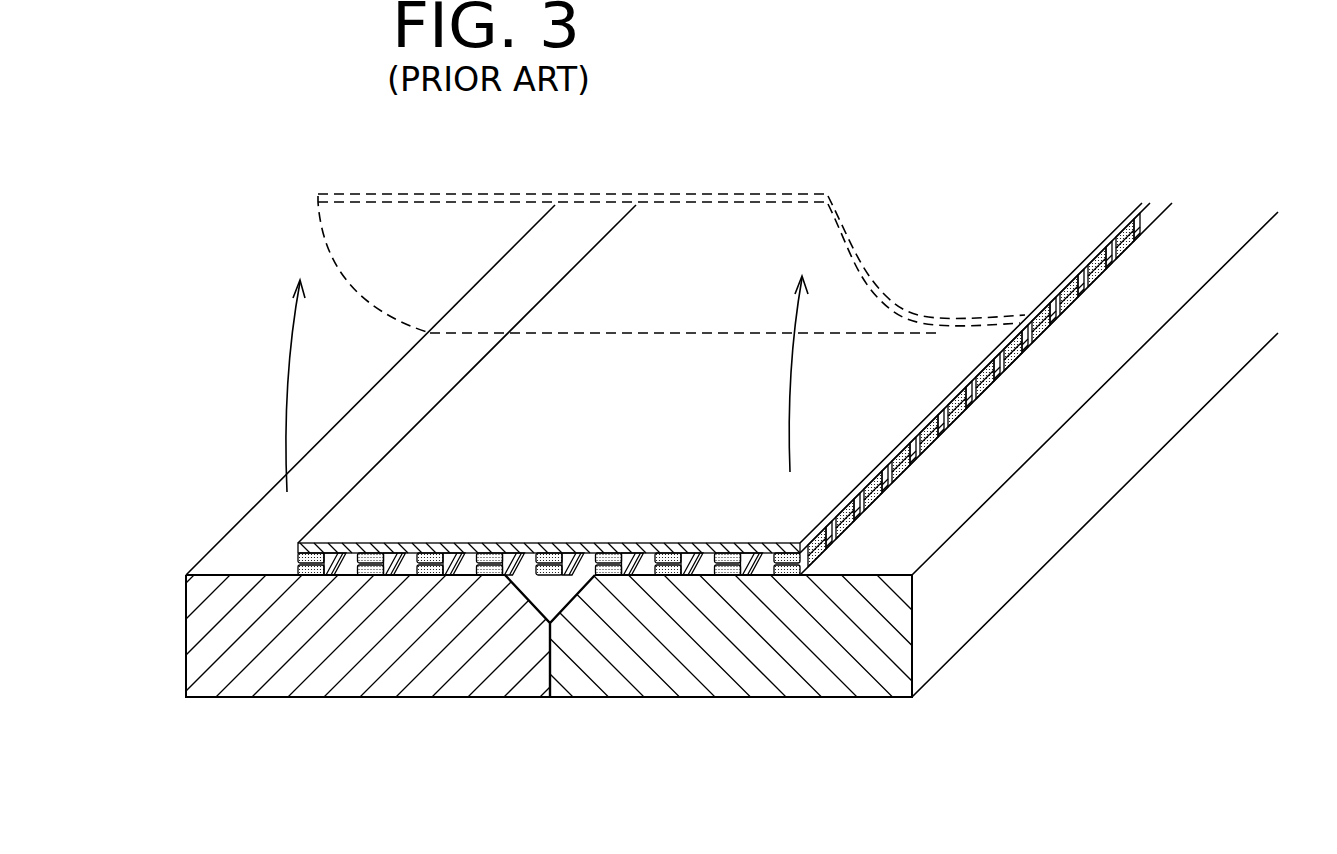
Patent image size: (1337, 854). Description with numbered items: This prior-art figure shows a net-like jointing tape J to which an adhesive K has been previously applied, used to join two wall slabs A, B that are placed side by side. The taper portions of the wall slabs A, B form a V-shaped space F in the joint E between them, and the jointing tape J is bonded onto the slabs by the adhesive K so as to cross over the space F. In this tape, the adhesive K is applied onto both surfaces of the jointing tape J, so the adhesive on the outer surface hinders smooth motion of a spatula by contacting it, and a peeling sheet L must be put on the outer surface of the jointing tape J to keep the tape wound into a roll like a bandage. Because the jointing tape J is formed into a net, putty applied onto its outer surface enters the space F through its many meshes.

The wall slab A is at (222, 680).
The wall slab B is at (862, 680).
The joint E is at (549, 700).
The V-shaped space F is at (546, 595).
The jointing tape J is at (980, 400).
The adhesive K is at (430, 575).
The peeling sheet L is at (490, 395).